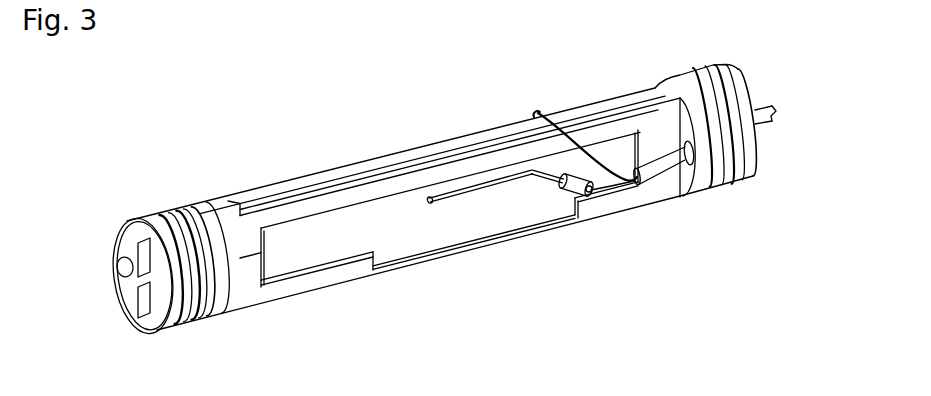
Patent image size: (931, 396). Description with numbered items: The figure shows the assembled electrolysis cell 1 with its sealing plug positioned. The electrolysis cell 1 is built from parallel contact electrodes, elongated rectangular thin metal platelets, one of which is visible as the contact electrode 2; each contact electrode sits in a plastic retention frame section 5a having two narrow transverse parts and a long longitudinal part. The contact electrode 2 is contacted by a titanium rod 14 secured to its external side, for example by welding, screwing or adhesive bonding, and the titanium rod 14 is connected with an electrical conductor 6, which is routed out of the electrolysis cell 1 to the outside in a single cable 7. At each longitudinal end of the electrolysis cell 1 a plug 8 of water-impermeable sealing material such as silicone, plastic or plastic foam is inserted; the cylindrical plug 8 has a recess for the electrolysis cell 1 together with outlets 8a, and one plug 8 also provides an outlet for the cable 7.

The electrolysis cell 1 is at (272, 173).
The contact electrode 2 is at (382, 220).
The titanium rod 14 is at (483, 185).
The retention frame section 5a is at (583, 135).
The cable 7 is at (758, 113).
The outlet 8a is at (141, 246).
The plug 8 is at (213, 275).
The electrical conductor 6 is at (617, 170).